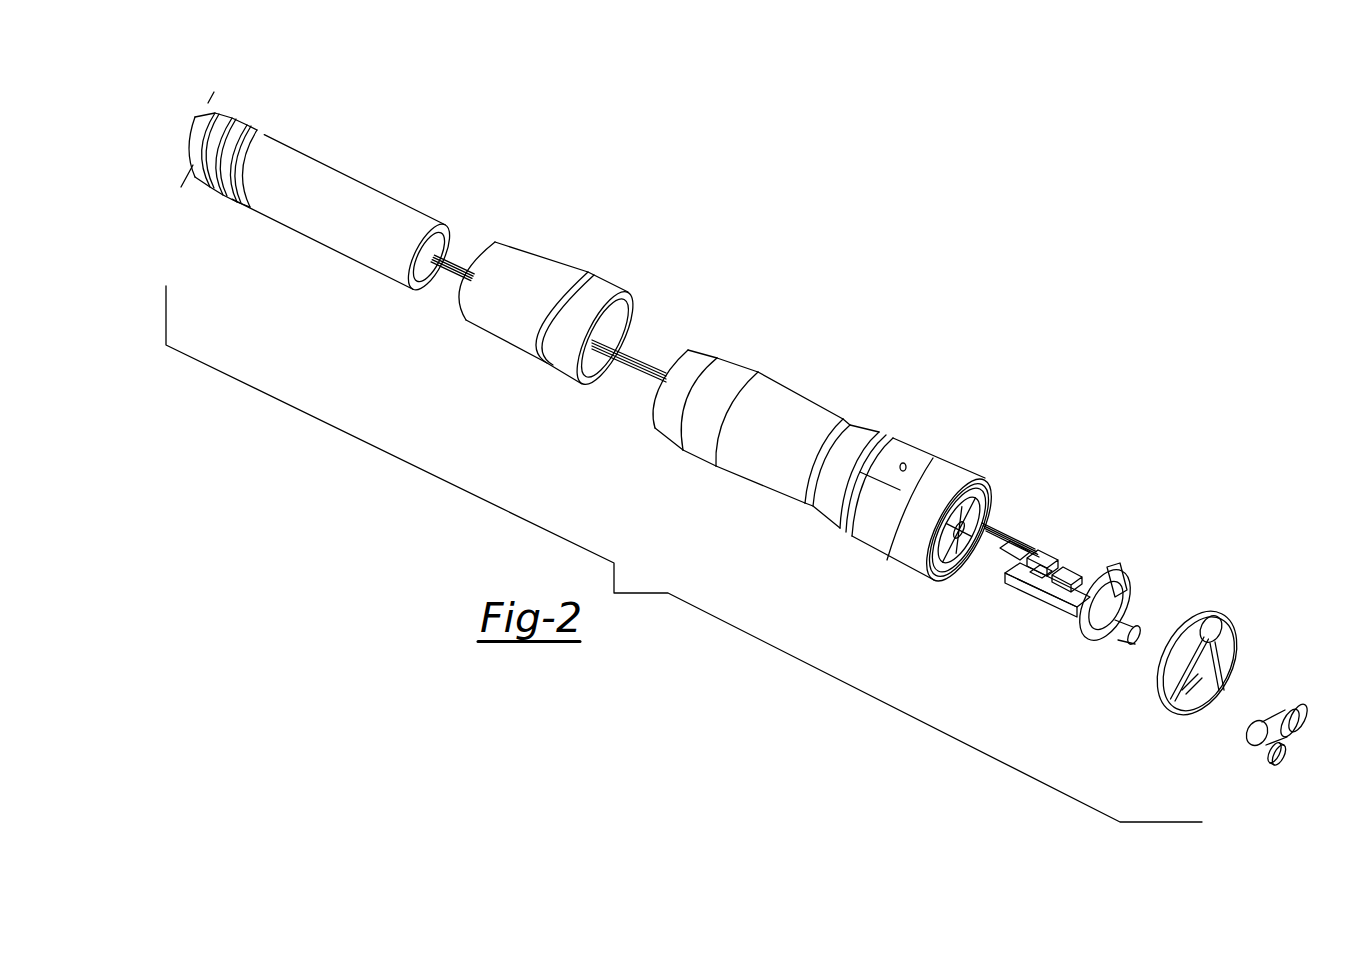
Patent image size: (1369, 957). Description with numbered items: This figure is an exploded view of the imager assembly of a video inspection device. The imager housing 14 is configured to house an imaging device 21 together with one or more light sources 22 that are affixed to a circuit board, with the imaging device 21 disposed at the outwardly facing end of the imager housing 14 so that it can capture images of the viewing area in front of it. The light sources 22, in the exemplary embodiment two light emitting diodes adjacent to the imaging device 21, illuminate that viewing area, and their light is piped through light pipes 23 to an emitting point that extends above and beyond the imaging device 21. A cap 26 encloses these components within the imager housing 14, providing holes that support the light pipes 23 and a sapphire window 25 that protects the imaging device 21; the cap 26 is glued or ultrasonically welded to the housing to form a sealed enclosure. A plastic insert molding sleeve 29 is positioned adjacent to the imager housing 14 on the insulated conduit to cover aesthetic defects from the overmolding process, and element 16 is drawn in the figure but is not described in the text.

The imager housing 14 is at (806, 385).
The threaded probe cylinder 16 is at (403, 220).
The imaging device 21 is at (1137, 633).
The light sources 22 is at (1115, 568).
The light pipes 23 is at (1280, 705).
The sapphire window 25 is at (1283, 770).
The cap 26 is at (1216, 616).
The insert molding sleeve 29 is at (550, 268).